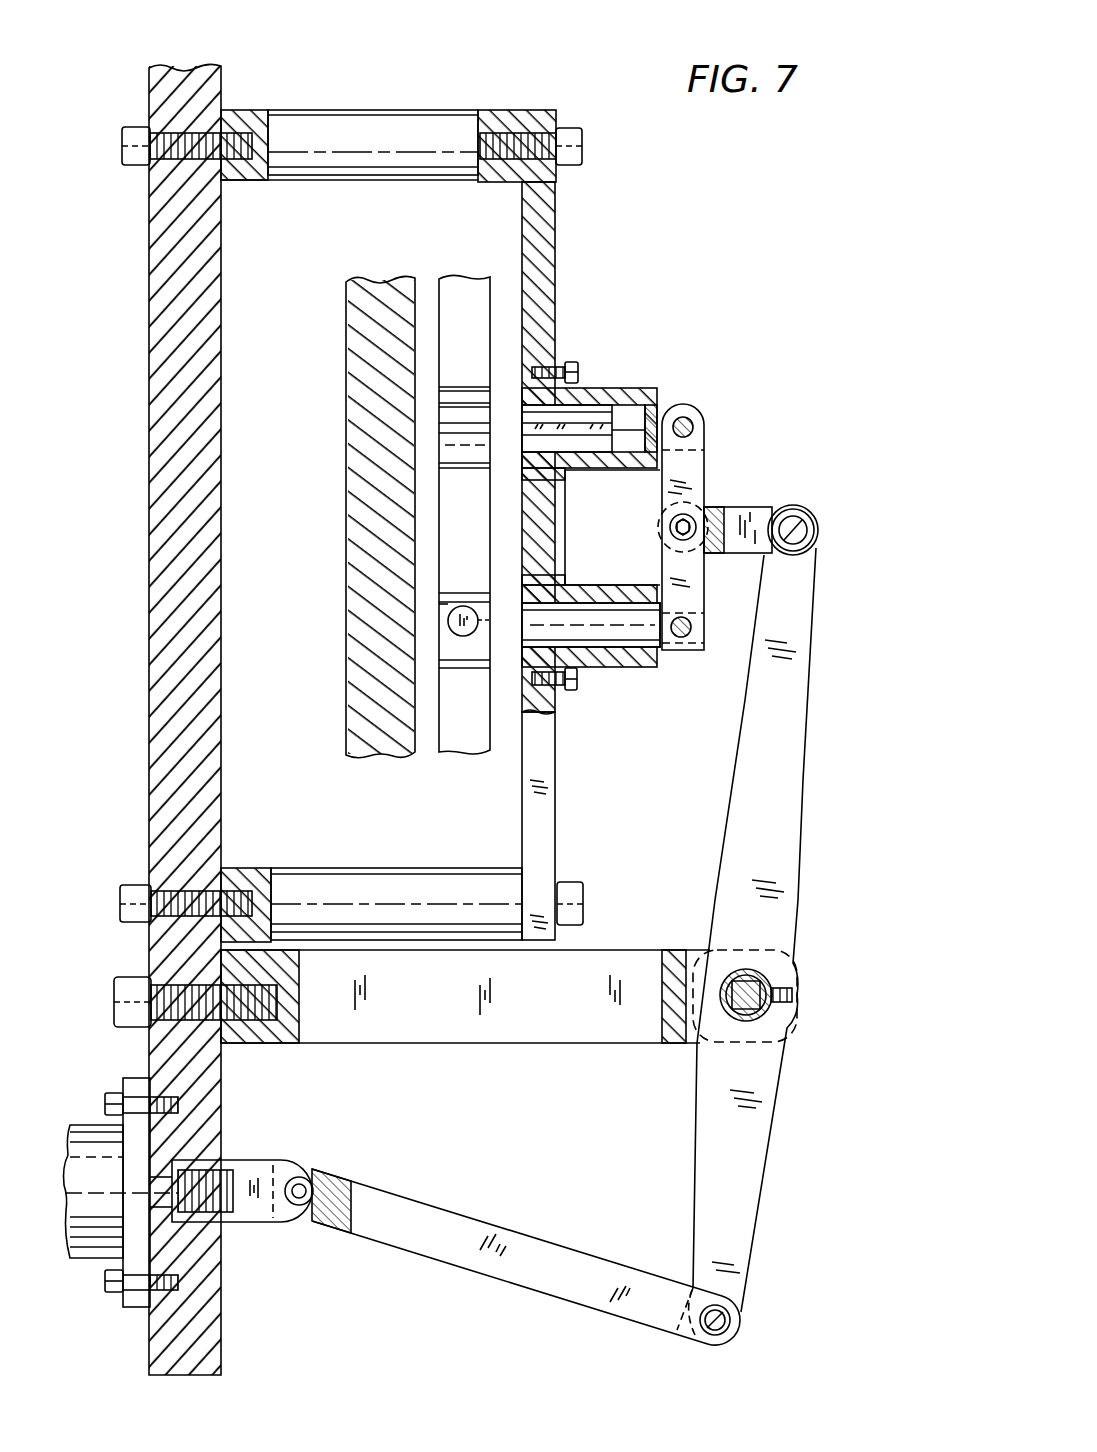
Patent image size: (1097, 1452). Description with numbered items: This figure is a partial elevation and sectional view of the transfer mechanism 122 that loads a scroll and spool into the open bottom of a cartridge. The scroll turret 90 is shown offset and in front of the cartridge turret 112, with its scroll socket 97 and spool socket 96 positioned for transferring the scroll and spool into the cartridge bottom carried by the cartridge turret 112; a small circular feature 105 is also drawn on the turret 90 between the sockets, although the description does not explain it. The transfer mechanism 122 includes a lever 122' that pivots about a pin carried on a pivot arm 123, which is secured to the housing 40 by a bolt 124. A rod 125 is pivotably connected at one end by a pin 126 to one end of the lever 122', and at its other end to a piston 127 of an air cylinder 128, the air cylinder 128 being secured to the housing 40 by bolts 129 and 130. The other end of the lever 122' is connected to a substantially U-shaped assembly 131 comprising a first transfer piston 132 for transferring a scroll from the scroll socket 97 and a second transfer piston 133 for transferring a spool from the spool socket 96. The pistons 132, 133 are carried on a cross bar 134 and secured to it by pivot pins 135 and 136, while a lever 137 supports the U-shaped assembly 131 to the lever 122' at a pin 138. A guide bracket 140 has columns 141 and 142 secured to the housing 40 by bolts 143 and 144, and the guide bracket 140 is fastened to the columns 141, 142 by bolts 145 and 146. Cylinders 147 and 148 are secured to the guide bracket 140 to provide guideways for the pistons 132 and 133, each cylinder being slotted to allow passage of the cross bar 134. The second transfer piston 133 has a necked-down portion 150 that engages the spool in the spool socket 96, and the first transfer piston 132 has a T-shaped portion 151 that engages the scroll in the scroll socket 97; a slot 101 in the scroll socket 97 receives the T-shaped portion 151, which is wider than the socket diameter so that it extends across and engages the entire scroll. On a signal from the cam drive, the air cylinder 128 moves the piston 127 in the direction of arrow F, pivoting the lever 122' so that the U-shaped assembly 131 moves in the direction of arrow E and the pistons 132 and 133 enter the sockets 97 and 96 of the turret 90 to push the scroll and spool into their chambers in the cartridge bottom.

The housing 40 is at (149, 387).
The scroll turret 90 is at (464, 497).
The spool socket 96 is at (457, 660).
The scroll socket 97 is at (460, 406).
The slot 101 is at (463, 434).
The pin 105 is at (472, 601).
The cartridge turret 112 is at (346, 326).
The transfer mechanism 122 is at (551, 1335).
The lever 122' is at (787, 930).
The pivot arm 123 is at (520, 1042).
The bolt 124 is at (116, 999).
The rod 125 is at (518, 1240).
The pin 126 is at (729, 1321).
The piston 127 is at (238, 1176).
The air cylinder 128 is at (68, 1240).
The bolt 129 is at (113, 1292).
The bolt 130 is at (122, 1094).
The U-shaped assembly 131 is at (698, 492).
The first transfer piston 132 is at (630, 410).
The second transfer piston 133 is at (613, 618).
The cross bar 134 is at (690, 472).
The pivot pin 135 is at (693, 427).
The pivot pin 136 is at (691, 628).
The lever 137 is at (746, 512).
The pin 138 is at (814, 522).
The guide bracket 140 is at (556, 203).
The column 141 is at (411, 95).
The column 142 is at (395, 880).
The bolt 143 is at (124, 150).
The bolt 144 is at (120, 901).
The bolt 145 is at (582, 140).
The bolt 146 is at (583, 900).
The cylinder 147 is at (625, 393).
The cylinder 148 is at (602, 676).
The necked-down portion 150 is at (527, 624).
The T-shaped portion 151 is at (582, 425).